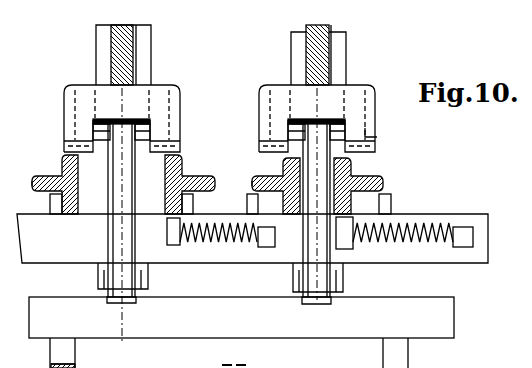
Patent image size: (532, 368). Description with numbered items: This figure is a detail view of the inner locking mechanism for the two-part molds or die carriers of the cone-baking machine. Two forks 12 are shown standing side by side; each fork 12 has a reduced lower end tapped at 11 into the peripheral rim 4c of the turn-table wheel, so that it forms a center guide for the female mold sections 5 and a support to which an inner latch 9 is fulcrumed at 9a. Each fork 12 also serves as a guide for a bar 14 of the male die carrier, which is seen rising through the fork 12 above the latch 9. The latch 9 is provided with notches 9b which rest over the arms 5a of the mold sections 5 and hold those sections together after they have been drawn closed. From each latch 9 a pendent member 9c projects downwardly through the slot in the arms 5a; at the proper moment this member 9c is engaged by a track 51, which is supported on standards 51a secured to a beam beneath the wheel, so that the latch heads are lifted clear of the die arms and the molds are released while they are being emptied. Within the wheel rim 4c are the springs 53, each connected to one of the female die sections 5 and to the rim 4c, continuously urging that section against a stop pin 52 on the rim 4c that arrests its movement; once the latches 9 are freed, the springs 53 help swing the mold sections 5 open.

The peripheral rim 4c is at (20, 240).
The mold section 5 is at (33, 175).
The arm 5a is at (62, 161).
The inner latch 9 is at (64, 125).
The fulcrum 9a is at (178, 111).
The notch 9b is at (100, 116).
The pendent member 9c is at (114, 243).
The tapped lower end 11 is at (219, 226).
The fork 12 is at (151, 55).
The bar 14 is at (133, 58).
The track 51 is at (241, 317).
The standard 51a is at (58, 346).
The stop pin 52 is at (50, 203).
The spring 53 is at (437, 214).